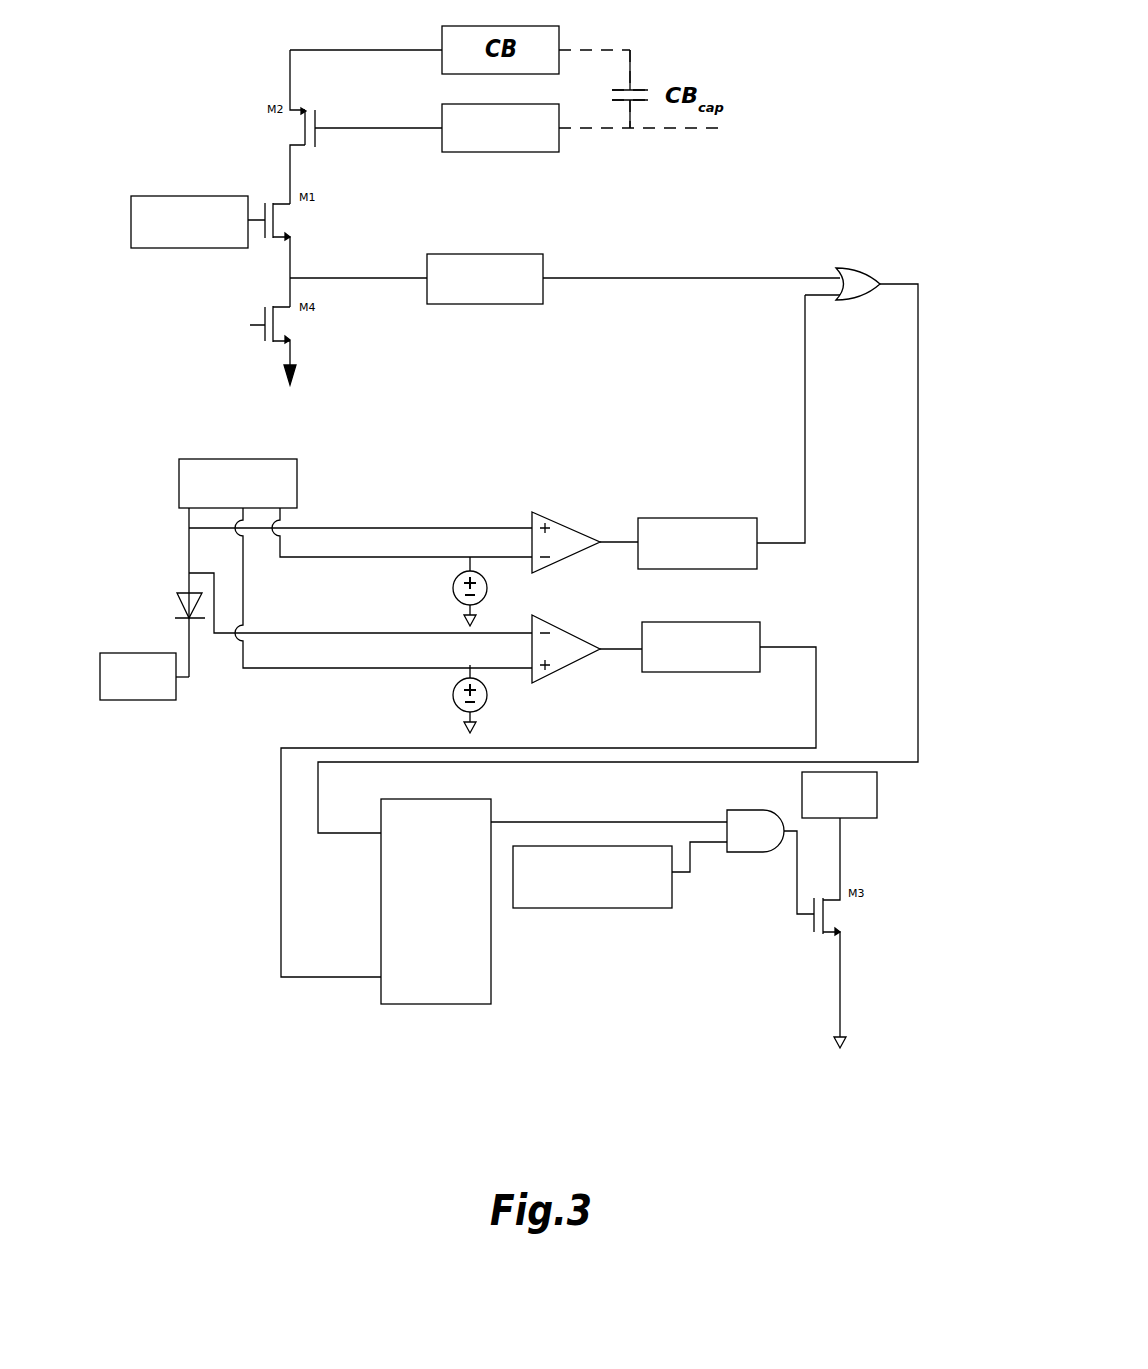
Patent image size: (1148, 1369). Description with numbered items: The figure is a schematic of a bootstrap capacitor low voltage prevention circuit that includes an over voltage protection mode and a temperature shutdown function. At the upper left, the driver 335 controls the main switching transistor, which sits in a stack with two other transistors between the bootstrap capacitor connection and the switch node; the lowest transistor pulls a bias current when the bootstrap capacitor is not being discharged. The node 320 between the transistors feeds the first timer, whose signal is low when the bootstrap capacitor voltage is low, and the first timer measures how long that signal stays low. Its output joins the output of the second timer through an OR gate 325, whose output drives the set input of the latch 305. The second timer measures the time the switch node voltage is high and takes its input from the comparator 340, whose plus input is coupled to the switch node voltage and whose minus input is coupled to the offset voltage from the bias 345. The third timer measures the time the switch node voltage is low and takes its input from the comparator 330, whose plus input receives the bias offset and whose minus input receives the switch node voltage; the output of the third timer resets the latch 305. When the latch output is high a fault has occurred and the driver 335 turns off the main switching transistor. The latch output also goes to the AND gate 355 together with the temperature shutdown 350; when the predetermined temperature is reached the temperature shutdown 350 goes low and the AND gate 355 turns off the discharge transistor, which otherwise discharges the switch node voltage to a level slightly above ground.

The latch 305 is at (491, 950).
The node 320 is at (290, 278).
The OR gate 325 is at (843, 268).
The comparator 330 is at (555, 625).
The driver 335 is at (170, 196).
The comparator 340 is at (555, 520).
The bias 345 is at (275, 459).
The temperature shutdown 350 is at (590, 838).
The AND gate 355 is at (735, 852).